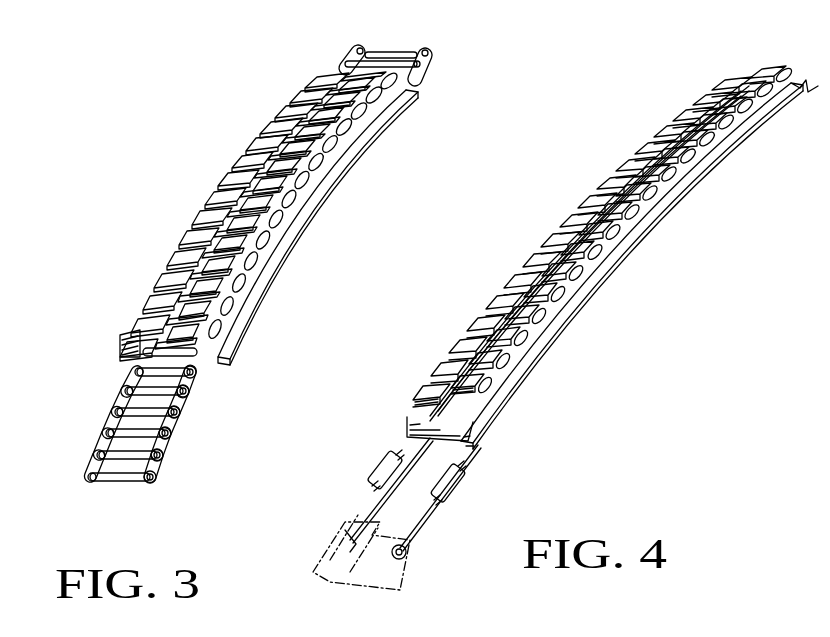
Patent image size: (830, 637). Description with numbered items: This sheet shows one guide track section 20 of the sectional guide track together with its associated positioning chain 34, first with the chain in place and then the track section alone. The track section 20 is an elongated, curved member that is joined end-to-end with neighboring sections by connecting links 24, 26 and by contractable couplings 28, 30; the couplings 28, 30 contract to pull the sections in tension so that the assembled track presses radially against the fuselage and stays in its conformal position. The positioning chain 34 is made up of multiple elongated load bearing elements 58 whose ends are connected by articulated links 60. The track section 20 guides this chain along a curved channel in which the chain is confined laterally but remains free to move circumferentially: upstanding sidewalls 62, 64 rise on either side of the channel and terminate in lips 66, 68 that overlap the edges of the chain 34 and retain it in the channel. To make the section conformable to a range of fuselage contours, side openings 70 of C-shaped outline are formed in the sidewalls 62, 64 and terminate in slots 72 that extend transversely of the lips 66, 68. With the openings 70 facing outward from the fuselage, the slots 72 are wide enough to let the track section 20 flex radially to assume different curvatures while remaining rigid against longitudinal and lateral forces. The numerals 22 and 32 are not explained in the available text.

In FIG. 3, the guide track section 20 is at (263, 281).
In FIG. 4, the guide track section 20 is at (563, 333).
In FIG. 4, the base plate 22 is at (765, 125).
In FIG. 4, the connecting link 24 is at (683, 183).
In FIG. 4, the connecting link 26 is at (625, 158).
In FIG. 4, the contractable coupling 28 is at (425, 508).
In FIG. 4, the contractable coupling 30 is at (360, 493).
In FIG. 4, the anchor bracket 32 is at (385, 580).
In FIG. 3, the positioning chain 34 is at (164, 434).
In FIG. 3, the load bearing element 58 is at (133, 458).
In FIG. 3, the articulated link 60 is at (170, 436).
In FIG. 3, the sidewall 62 is at (270, 224).
In FIG. 3, the sidewall 64 is at (170, 264).
In FIG. 3, the lip 66 is at (290, 196).
In FIG. 3, the lip 68 is at (248, 157).
In FIG. 3, the side opening 70 is at (367, 113).
In FIG. 4, the side opening 70 is at (829, 379).
In FIG. 3, the slot 72 is at (335, 168).